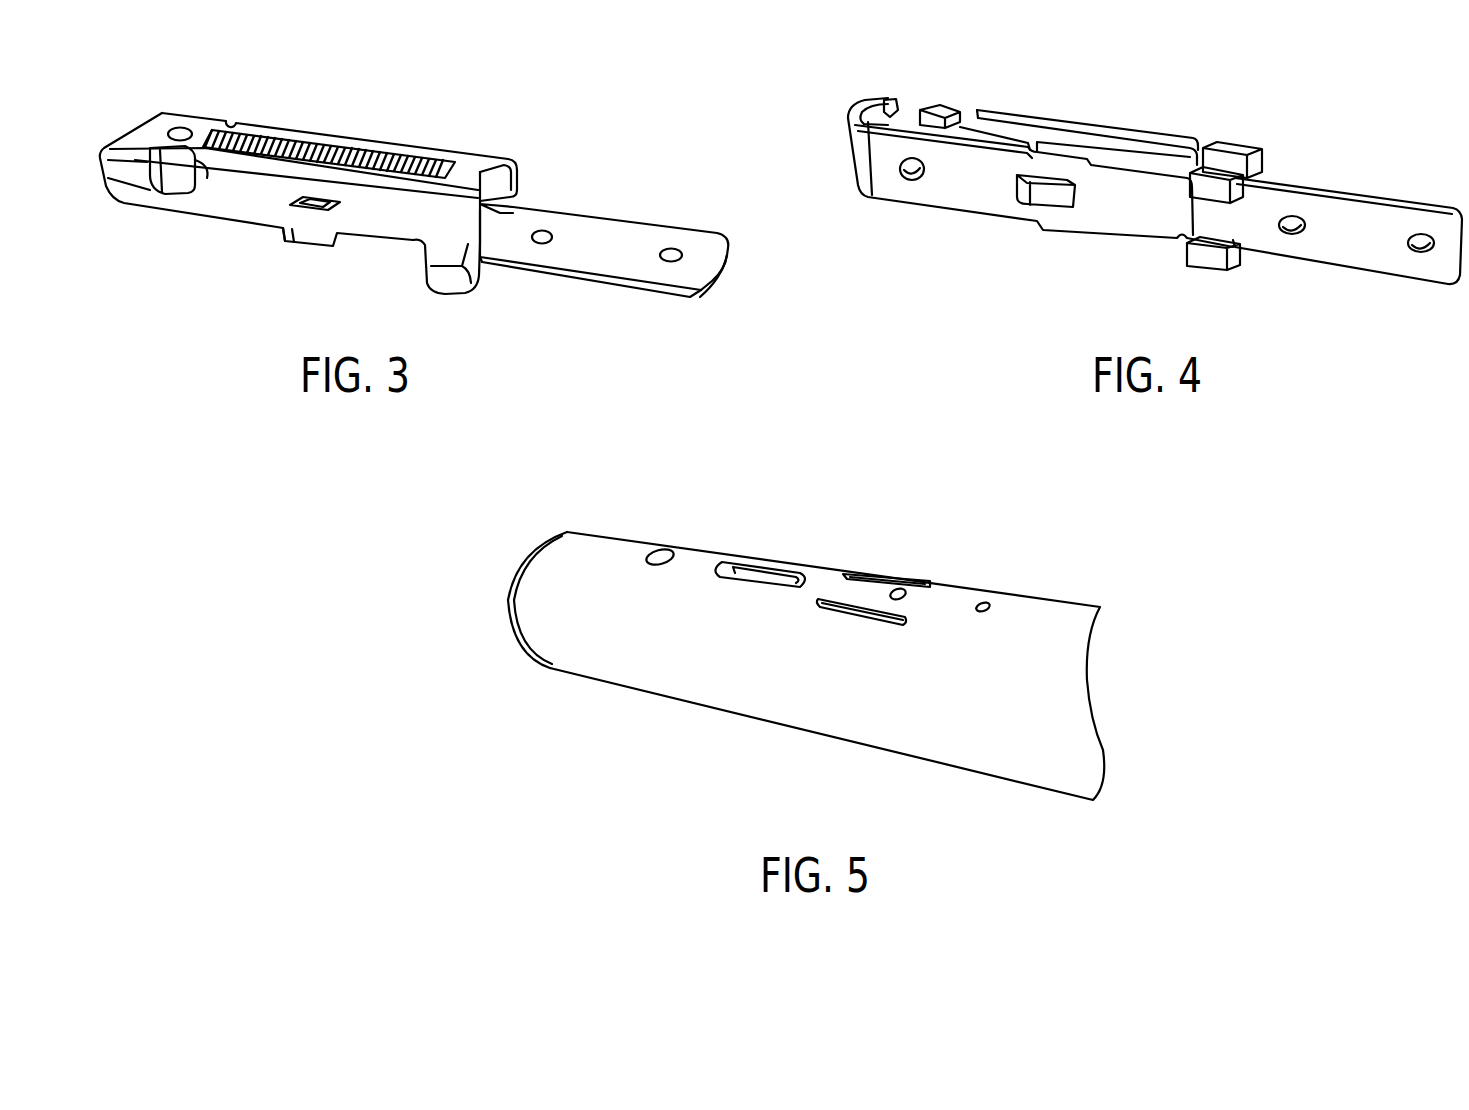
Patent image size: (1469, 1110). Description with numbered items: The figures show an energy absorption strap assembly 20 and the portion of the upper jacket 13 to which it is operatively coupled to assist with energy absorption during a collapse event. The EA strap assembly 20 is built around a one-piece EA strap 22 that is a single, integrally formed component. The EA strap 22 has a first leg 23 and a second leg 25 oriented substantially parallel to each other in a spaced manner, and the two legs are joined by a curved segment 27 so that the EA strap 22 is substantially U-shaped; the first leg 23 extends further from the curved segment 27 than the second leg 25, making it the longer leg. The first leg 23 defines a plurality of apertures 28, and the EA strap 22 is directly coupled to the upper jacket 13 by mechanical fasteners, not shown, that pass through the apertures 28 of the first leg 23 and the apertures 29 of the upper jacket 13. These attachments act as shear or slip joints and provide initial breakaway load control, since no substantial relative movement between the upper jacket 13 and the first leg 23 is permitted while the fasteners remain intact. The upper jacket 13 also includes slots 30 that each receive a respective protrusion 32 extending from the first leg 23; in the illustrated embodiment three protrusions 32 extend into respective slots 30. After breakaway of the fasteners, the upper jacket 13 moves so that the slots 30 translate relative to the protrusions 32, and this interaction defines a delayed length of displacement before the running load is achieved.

In FIG. 5, the upper jacket 13 is at (850, 530).
In FIG. 3, the energy absorption strap assembly 20 is at (235, 262).
In FIG. 3, the EA strap 22 is at (604, 223).
In FIG. 4, the EA strap 22 is at (1347, 201).
In FIG. 3, the first leg 23 is at (587, 253).
In FIG. 4, the first leg 23 is at (1335, 252).
In FIG. 3, the second leg 25 is at (473, 170).
In FIG. 4, the second leg 25 is at (1116, 143).
In FIG. 3, the curved segment 27 is at (104, 152).
In FIG. 4, the curved segment 27 is at (847, 108).
In FIG. 3, the apertures 28 is at (545, 205).
In FIG. 4, the apertures 28 is at (1418, 236).
In FIG. 5, the apertures 29 is at (973, 578).
In FIG. 5, the slot 30 is at (891, 552).
In FIG. 4, the protrusion 32 is at (1205, 262).